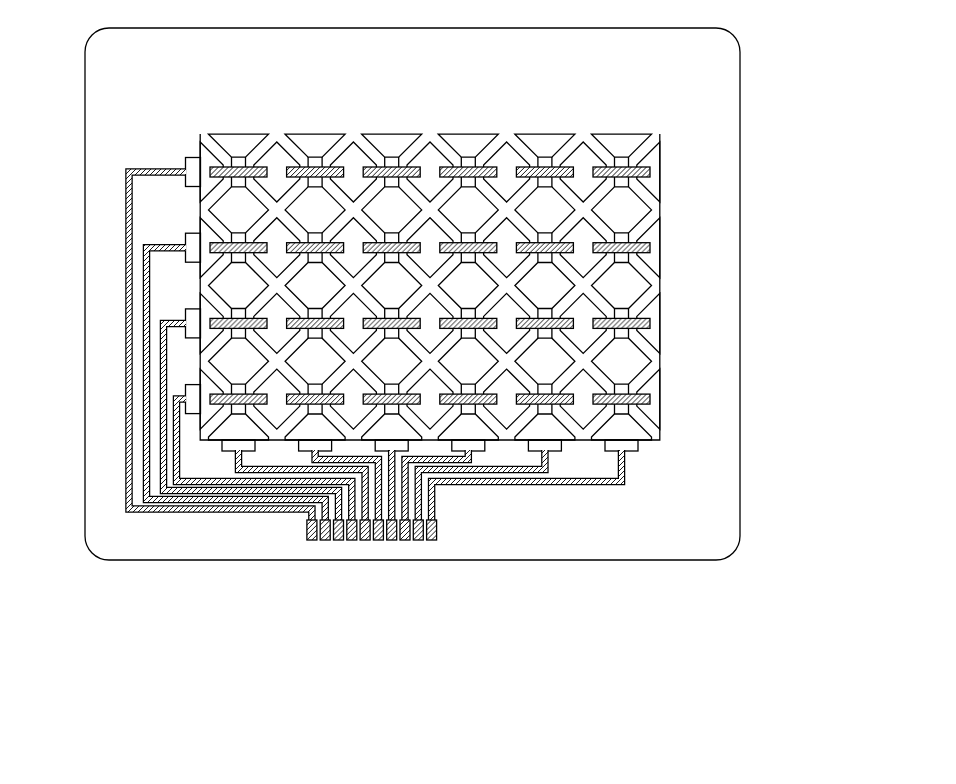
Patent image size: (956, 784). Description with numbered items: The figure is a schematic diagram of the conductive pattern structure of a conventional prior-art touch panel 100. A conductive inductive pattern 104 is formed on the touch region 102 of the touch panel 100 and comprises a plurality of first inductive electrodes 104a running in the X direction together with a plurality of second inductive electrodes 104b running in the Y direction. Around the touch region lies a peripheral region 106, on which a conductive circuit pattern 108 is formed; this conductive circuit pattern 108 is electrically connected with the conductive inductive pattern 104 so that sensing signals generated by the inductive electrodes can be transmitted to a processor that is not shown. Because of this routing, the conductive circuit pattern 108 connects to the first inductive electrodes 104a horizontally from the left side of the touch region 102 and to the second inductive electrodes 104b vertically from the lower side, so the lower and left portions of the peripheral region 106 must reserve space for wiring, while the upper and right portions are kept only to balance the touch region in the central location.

The touch panel 100 is at (764, 46).
The touch region 102 is at (613, 208).
The conductive inductive pattern 104 is at (517, 287).
The first inductive electrodes 104a is at (658, 308).
The second inductive electrodes 104b is at (640, 276).
The peripheral region 106 is at (728, 392).
The conductive circuit pattern 108 is at (128, 305).